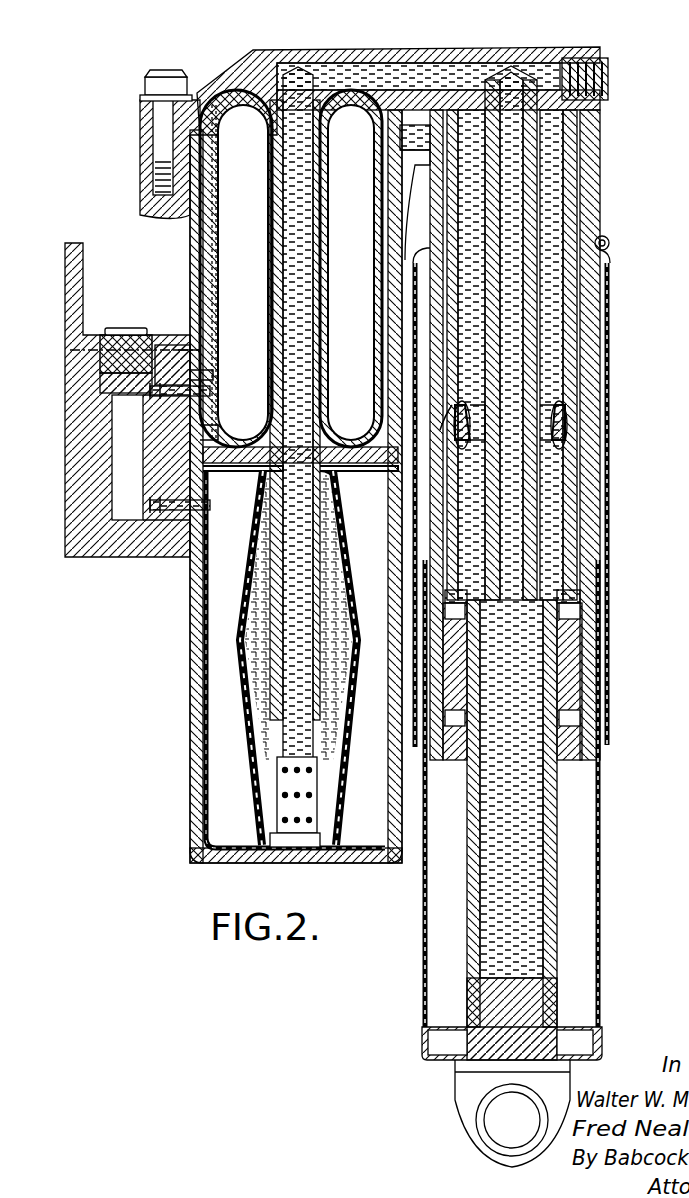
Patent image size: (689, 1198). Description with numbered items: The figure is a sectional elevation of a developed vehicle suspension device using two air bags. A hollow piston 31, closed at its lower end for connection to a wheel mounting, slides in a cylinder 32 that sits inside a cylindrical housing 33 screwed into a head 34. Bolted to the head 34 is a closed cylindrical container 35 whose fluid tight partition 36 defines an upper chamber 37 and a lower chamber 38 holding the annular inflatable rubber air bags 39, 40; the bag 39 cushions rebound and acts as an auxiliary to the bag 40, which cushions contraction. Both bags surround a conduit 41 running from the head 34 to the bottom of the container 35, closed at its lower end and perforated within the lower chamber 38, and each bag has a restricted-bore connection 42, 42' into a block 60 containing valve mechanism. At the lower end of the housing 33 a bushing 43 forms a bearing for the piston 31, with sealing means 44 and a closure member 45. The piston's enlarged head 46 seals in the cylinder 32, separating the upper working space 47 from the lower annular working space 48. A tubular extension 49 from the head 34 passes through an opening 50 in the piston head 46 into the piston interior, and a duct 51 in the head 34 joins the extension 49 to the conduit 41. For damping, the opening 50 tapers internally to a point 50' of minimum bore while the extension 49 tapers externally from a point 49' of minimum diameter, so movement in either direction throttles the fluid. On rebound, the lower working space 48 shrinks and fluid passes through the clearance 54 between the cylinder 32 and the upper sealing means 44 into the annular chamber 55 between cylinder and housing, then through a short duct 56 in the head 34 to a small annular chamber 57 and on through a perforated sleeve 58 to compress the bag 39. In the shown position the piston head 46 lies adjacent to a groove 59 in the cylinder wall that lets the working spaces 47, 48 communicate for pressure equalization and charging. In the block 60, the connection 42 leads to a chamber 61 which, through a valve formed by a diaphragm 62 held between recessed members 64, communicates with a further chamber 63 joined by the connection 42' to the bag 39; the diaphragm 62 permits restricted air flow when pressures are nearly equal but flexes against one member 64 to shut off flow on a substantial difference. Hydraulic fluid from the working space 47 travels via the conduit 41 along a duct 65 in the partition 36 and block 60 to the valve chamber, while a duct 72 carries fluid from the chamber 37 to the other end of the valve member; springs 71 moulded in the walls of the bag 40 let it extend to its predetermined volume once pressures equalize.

The hollow piston 31 is at (548, 520).
The cylinder 32 is at (565, 300).
The cylindrical housing 33 is at (540, 345).
The head 34 is at (512, 60).
The closed cylindrical container 35 is at (214, 266).
The fluid tight partition 36 is at (365, 472).
The upper chamber 37 is at (340, 465).
The lower chamber 38 is at (262, 832).
The air bag 39 is at (240, 240).
The air bag 40 is at (232, 790).
The conduit 41 is at (296, 283).
The connection 42 is at (201, 522).
The connection 42' is at (202, 392).
The bushing 43 is at (565, 650).
The sealing means 44 is at (570, 610).
The closure member 45 is at (580, 755).
The enlarged head 46 is at (555, 460).
The upper working space 47 is at (537, 380).
The lower annular working space 48 is at (558, 550).
The tubular extension 49 is at (565, 355).
The point of minimum diameter 49' is at (574, 422).
The opening 50 is at (563, 415).
The point of minimum bore 50' is at (616, 431).
The duct 51 is at (428, 78).
The clearance 54 is at (565, 590).
The annular chamber 55 is at (577, 495).
The short duct 56 is at (418, 130).
The small annular chamber 57 is at (185, 140).
The perforated sleeve 58 is at (195, 220).
The groove 59 is at (455, 425).
The block 60 is at (80, 270).
The chamber 61 is at (132, 500).
The diaphragm 62 is at (213, 445).
The further chamber 63 is at (213, 375).
The recessed members 64 is at (213, 432).
The duct 65 is at (236, 471).
The springs 71 is at (340, 635).
The duct 72 is at (195, 355).